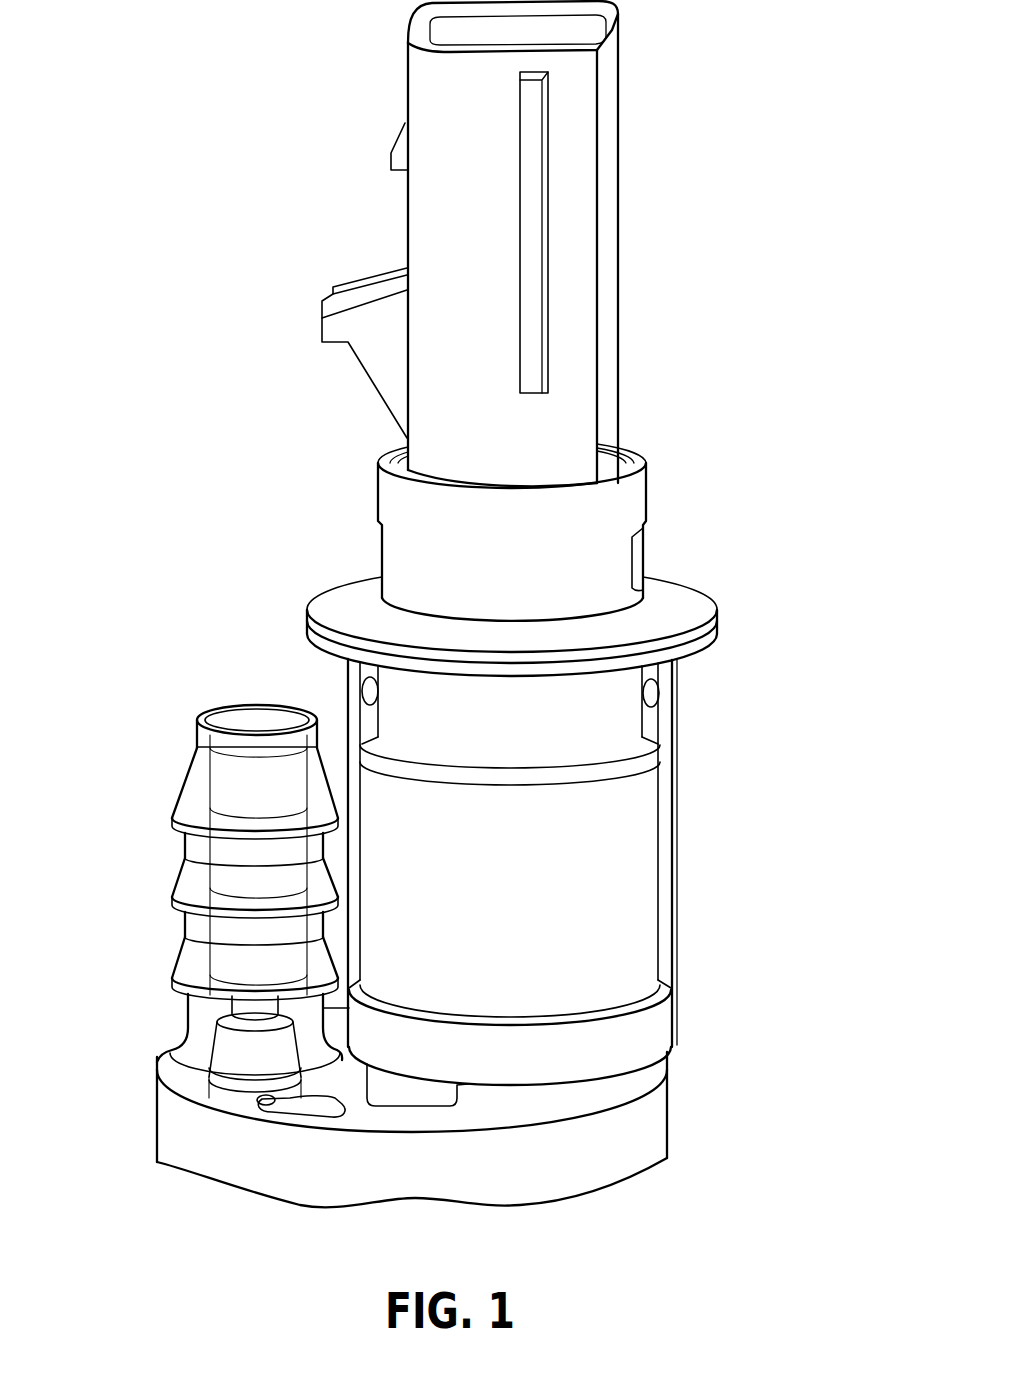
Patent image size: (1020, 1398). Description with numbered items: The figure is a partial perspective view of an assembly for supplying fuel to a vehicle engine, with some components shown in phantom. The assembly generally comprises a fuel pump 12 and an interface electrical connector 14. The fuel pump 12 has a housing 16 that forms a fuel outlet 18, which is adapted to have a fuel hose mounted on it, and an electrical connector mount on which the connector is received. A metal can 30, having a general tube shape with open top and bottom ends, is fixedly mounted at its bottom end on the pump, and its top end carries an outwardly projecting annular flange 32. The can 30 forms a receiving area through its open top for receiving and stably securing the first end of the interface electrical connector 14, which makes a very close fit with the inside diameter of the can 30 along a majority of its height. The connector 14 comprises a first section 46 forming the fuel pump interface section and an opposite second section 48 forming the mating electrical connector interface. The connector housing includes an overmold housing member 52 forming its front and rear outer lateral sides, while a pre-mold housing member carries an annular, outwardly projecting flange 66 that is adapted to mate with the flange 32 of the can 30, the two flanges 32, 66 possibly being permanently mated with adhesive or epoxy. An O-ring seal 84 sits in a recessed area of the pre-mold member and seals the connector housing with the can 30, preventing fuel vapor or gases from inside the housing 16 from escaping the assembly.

The fuel pump 12 is at (362, 944).
The interface electrical connector 14 is at (545, 311).
The housing 16 is at (172, 1132).
The fuel outlet 18 is at (197, 733).
The can 30 is at (728, 628).
The annular flange 32 is at (315, 647).
The first section 46 is at (627, 917).
The second section 48 is at (600, 150).
The overmold housing member 52 is at (583, 403).
The flange 66 is at (345, 595).
The O-ring seal 84 is at (692, 705).